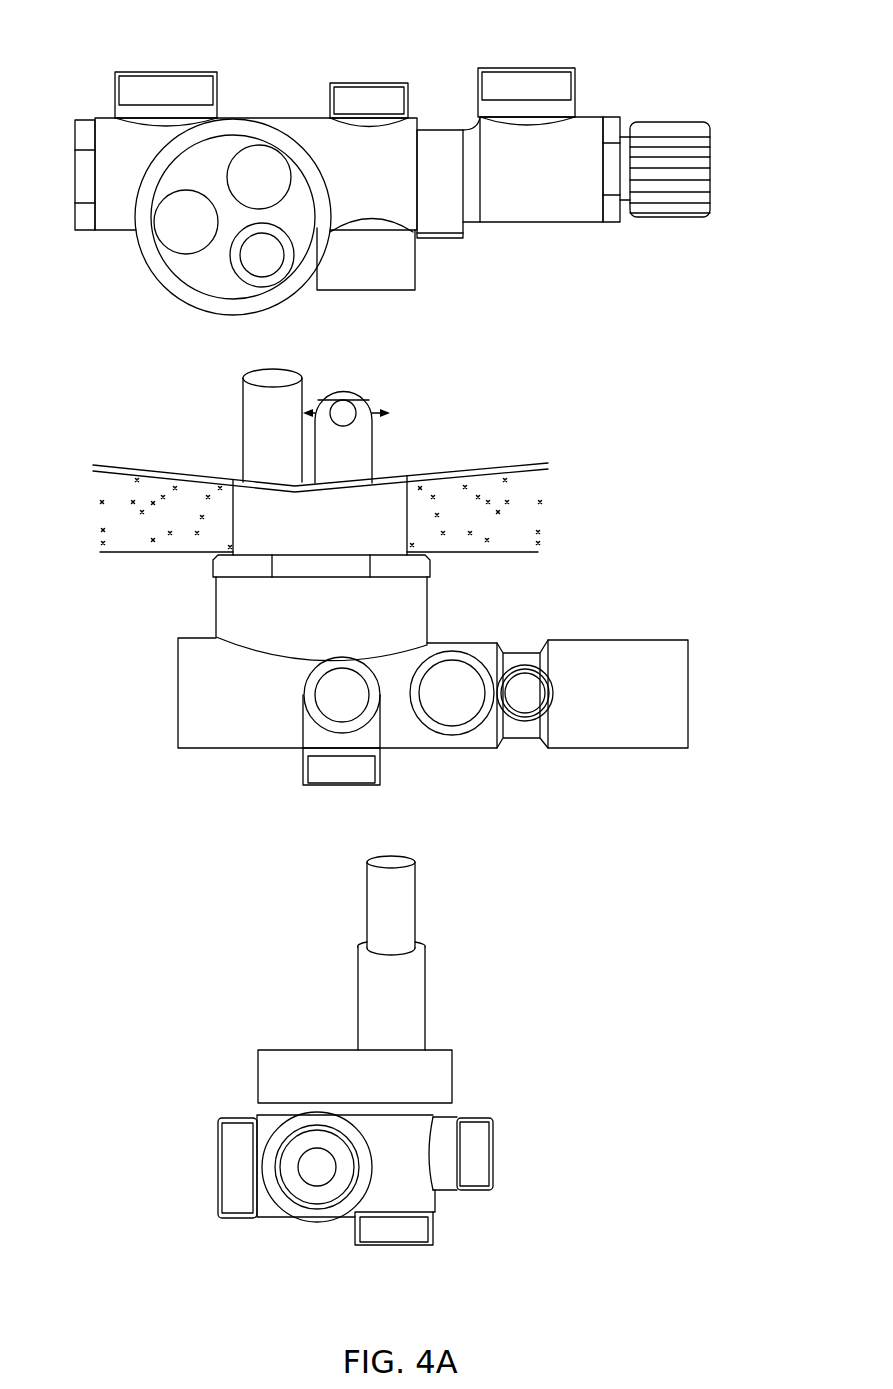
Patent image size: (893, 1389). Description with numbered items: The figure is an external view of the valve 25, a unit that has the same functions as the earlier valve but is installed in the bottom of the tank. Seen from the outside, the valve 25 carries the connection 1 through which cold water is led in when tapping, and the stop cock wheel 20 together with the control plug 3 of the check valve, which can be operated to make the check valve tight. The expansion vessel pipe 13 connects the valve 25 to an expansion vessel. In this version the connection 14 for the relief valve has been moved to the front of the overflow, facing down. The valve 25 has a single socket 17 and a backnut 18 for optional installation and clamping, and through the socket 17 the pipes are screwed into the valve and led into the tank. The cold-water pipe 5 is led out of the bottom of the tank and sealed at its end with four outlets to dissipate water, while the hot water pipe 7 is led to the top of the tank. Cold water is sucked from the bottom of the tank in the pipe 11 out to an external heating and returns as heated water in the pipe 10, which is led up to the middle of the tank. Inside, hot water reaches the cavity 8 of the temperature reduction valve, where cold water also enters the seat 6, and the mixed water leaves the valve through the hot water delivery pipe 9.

The connection 1 is at (525, 68).
The control plug 3 is at (453, 238).
The cold-water pipe 5 is at (266, 188).
The seat 6 is at (310, 1173).
The hot water pipe 7 is at (193, 234).
The cavity 8 is at (330, 1195).
The hot water delivery pipe 9 is at (160, 72).
The pipe 10 is at (310, 232).
The pipe 11 is at (273, 266).
The expansion vessel pipe 13 is at (364, 83).
The connection 14 is at (368, 290).
The socket 17 is at (233, 530).
The backnut 18 is at (213, 573).
The stop cock wheel 20 is at (673, 118).
The valve 25 is at (427, 608).